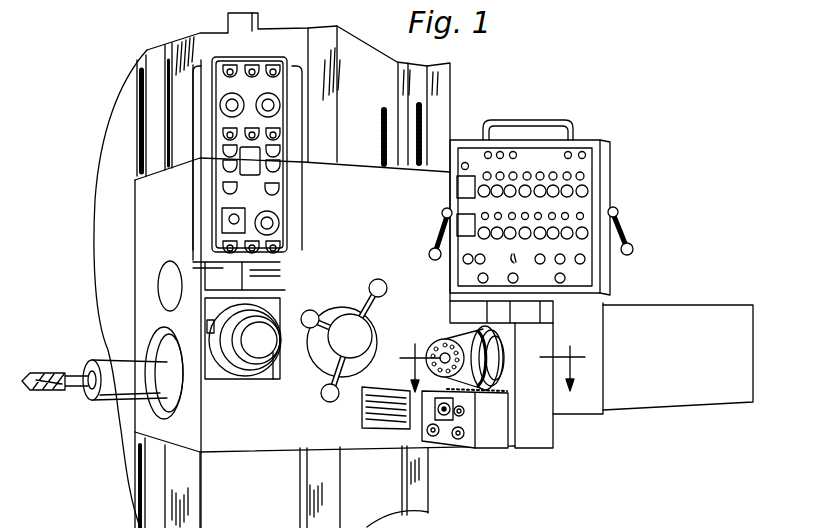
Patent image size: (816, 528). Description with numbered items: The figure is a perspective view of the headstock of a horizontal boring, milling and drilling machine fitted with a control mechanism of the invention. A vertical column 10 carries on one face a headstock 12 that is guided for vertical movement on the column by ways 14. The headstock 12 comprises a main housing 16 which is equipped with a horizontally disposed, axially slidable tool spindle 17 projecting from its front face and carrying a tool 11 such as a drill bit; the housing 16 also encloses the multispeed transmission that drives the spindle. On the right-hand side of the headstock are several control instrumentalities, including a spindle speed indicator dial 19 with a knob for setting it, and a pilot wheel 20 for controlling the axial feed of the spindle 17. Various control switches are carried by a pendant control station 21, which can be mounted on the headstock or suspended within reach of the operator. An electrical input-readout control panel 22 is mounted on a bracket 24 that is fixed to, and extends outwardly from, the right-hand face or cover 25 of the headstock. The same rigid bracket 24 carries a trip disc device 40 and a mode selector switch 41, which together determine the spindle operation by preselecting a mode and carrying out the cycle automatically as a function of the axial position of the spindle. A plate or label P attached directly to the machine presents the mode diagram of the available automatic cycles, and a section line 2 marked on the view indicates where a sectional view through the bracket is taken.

The vertical column 10 is at (105, 150).
The tool 11 is at (40, 372).
The headstock 12 is at (356, 176).
The ways 14 is at (180, 43).
The main housing 16 is at (143, 234).
The tool spindle 17 is at (91, 398).
The spindle speed indicator dial 19 is at (253, 375).
The pilot wheel 20 is at (348, 315).
The pendant control station 21 is at (292, 224).
The electrical input-readout control panel 22 is at (612, 177).
The bracket 24 is at (553, 437).
The right-hand face or cover 25 is at (263, 444).
The trip disc device 40 is at (447, 335).
The mode selector switch 41 is at (431, 405).
The section line 2- 2 is at (492, 357).
The plate or label P is at (362, 425).